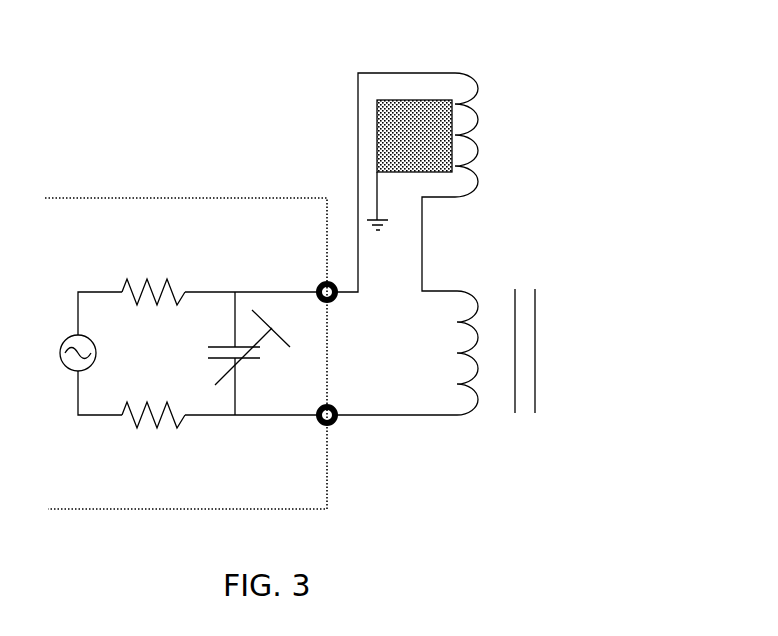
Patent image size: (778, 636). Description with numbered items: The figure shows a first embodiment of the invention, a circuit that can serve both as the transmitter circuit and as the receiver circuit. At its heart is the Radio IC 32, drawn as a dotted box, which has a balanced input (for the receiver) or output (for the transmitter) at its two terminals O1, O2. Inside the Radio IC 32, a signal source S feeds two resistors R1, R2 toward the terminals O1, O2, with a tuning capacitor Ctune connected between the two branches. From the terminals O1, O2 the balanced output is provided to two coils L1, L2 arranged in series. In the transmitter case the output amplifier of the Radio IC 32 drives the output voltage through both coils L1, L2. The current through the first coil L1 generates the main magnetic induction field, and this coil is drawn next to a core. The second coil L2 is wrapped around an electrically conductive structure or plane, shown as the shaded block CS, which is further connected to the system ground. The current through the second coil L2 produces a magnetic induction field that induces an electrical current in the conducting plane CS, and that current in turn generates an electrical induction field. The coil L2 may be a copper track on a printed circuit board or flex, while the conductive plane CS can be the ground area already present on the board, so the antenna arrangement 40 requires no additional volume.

The Radio IC 32 is at (270, 202).
The antenna assembly with coils L1, L2 and current sensor CS 40 is at (476, 228).
The signal source S is at (63, 353).
The resistor R1 is at (153, 278).
The resistor R2 is at (153, 402).
The tuning capacitor Ctune is at (248, 376).
The terminal O1 is at (347, 282).
The terminal O2 is at (347, 405).
The first coil L1 is at (464, 339).
The second coil L2 is at (465, 119).
The electrical conducting plane CS is at (409, 165).